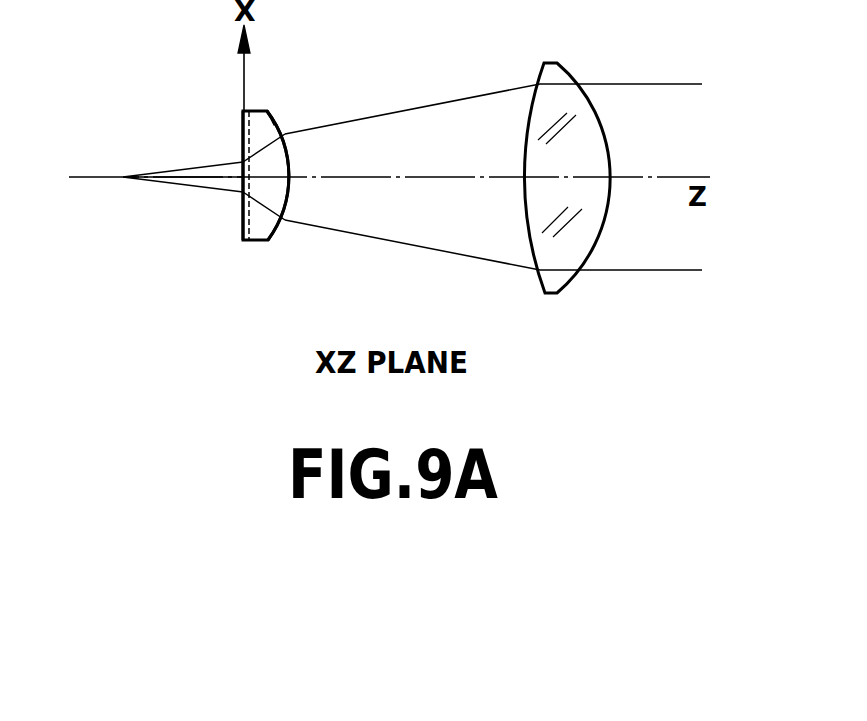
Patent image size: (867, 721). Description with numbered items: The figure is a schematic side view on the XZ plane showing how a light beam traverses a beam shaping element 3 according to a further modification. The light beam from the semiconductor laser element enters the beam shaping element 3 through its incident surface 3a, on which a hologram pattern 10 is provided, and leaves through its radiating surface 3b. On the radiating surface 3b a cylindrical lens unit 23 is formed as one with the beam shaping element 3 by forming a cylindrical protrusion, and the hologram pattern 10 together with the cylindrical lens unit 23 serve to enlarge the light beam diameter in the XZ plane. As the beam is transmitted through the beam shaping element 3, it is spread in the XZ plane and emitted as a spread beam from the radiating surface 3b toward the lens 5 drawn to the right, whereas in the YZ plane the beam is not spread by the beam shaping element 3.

The beam shaping element 3 is at (263, 110).
The incident surface 3a is at (243, 227).
The radiating surface 3b is at (277, 232).
The cylindrical lens unit 23 is at (278, 123).
The hologram pattern 10 is at (243, 125).
The objective lens 5 is at (560, 63).